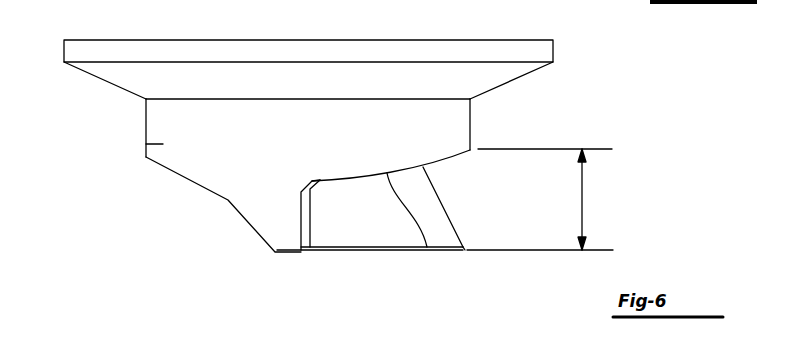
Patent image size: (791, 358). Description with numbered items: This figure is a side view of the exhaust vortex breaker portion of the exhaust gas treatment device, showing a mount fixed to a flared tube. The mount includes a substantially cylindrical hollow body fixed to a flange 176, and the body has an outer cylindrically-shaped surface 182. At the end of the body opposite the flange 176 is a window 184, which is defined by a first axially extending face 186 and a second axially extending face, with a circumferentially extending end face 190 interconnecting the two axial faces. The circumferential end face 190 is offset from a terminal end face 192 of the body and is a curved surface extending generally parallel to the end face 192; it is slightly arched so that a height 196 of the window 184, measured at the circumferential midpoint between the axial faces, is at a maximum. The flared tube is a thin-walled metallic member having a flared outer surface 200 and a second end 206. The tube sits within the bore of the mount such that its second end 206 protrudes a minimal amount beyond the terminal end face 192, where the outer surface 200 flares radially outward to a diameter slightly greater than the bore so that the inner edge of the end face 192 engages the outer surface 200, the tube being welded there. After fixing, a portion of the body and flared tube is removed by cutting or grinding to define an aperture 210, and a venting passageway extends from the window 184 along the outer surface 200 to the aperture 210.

The flange 176 is at (82, 55).
The outer cylindrically-shaped surface 182 is at (146, 145).
The aperture 210 is at (200, 188).
The terminal end face 192 is at (291, 252).
The first axially extending face 186 is at (305, 230).
The outer surface 200 is at (363, 222).
The circumferentially extending end face 190 is at (427, 247).
The window 184 is at (440, 186).
The second end 206 is at (462, 255).
The height 196 is at (581, 147).